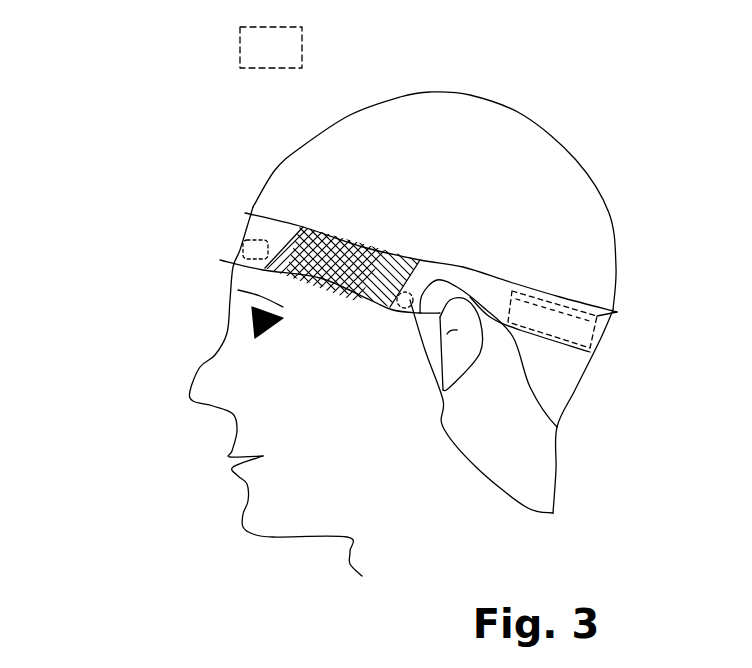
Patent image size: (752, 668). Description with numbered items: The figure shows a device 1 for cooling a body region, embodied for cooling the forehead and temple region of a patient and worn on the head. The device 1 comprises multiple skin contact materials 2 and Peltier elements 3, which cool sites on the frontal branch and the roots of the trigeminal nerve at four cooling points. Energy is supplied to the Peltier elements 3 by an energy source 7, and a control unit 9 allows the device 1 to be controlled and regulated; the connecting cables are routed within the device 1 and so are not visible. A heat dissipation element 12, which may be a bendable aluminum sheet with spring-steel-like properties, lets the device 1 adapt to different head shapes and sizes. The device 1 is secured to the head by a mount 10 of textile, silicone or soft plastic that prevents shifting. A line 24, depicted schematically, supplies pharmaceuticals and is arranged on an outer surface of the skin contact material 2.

The device 1 is at (222, 260).
The skin contact material 2 is at (557, 427).
The Peltier element 3 is at (553, 513).
The energy source 7 is at (617, 312).
The control unit 9 is at (509, 300).
The mount 10 is at (473, 270).
The heat dissipation element 12 is at (333, 230).
The line 24 is at (271, 47).